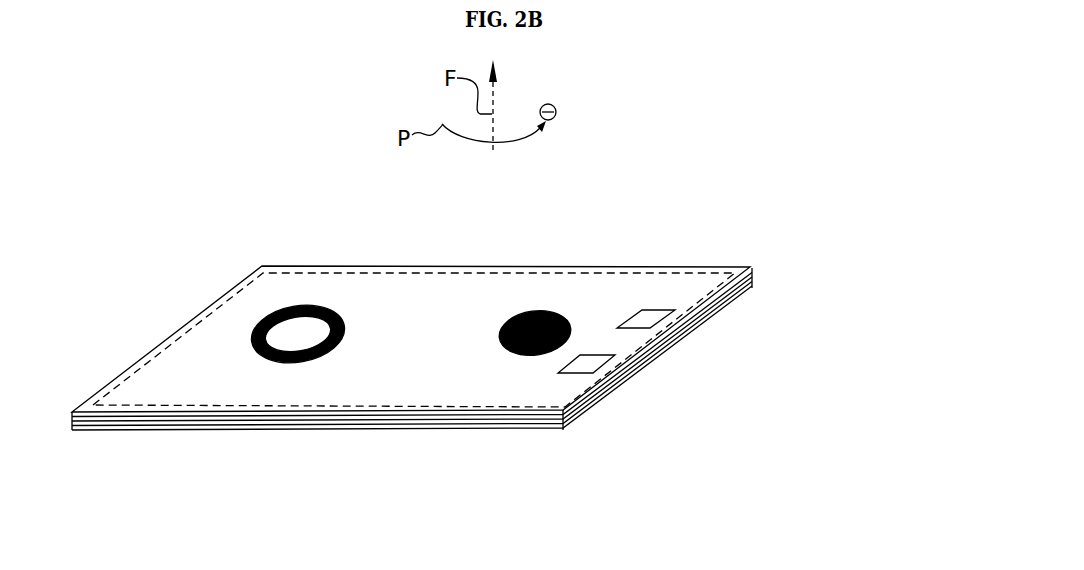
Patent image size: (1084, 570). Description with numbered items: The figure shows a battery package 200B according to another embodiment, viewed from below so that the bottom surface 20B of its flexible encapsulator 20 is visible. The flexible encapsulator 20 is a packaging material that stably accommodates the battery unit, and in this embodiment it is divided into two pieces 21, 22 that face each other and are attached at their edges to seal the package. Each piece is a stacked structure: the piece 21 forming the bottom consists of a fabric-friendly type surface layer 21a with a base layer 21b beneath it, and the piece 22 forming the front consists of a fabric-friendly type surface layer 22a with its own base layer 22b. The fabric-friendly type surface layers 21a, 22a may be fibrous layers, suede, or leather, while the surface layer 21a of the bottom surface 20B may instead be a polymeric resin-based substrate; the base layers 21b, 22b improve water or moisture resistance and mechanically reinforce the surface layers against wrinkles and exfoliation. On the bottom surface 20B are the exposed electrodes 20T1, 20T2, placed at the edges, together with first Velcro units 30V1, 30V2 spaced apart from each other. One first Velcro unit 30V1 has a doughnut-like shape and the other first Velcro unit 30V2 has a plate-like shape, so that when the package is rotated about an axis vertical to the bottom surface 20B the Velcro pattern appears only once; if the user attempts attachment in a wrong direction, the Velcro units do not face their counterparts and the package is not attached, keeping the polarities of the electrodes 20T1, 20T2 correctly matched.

The substrate assembly 200B is at (505, 268).
The flexible encapsulator 20 is at (505, 325).
The bottom surface 20B is at (380, 303).
The piece 21 is at (482, 325).
The fabric-friendly type surface layer 21a is at (752, 264).
The base layer 21b is at (750, 276).
The piece 22 is at (482, 356).
The fabric-friendly type surface layer 22a is at (682, 335).
The base layer 22b is at (715, 307).
The first Velcro unit 30V1 is at (253, 337).
The first Velcro unit 30V2 is at (530, 312).
The exposed electrode 20T1 is at (587, 363).
The exposed electrode 20T2 is at (653, 313).